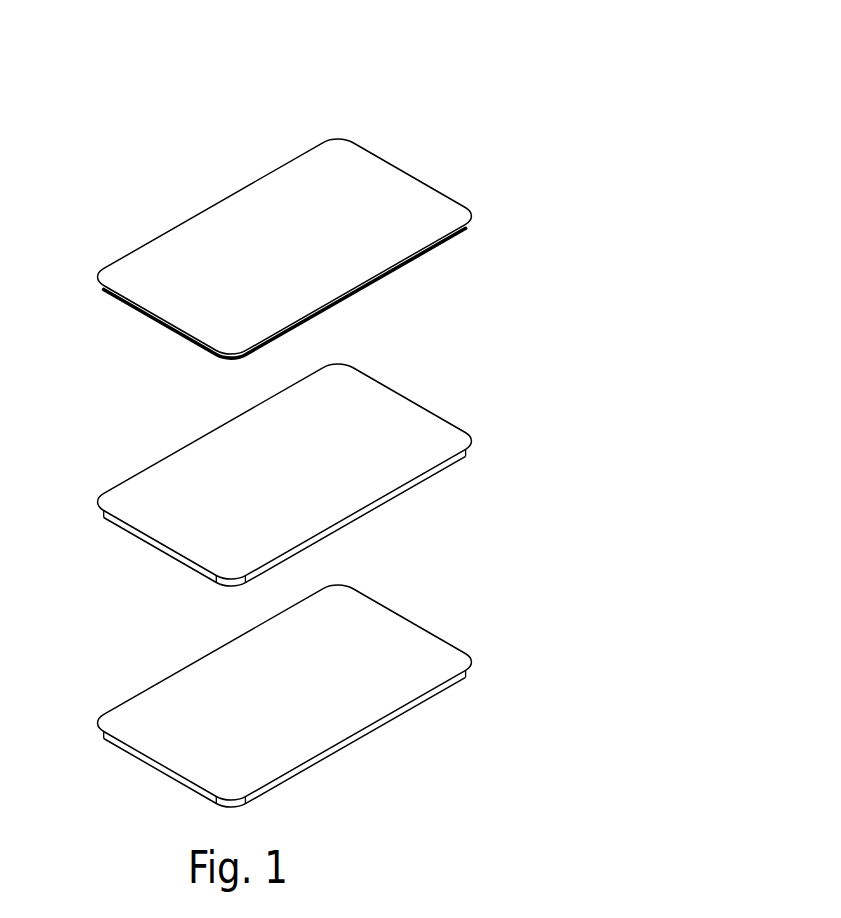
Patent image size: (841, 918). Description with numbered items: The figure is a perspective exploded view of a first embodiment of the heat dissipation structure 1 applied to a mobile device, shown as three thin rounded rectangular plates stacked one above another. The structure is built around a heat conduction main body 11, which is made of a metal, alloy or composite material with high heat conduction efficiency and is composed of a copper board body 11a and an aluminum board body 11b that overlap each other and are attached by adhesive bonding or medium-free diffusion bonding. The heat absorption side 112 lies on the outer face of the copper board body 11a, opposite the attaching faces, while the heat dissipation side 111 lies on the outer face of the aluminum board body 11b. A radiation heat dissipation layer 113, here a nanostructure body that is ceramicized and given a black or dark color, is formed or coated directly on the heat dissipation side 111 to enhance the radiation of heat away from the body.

The heat dissipation structure 1 is at (722, 160).
The heat conduction main body 11 is at (688, 485).
The copper board body 11a is at (460, 658).
The aluminum board body 11b is at (472, 449).
The heat dissipation side 111 is at (420, 438).
The heat absorption side 112 is at (438, 695).
The radiation heat dissipation layer 113 is at (417, 190).